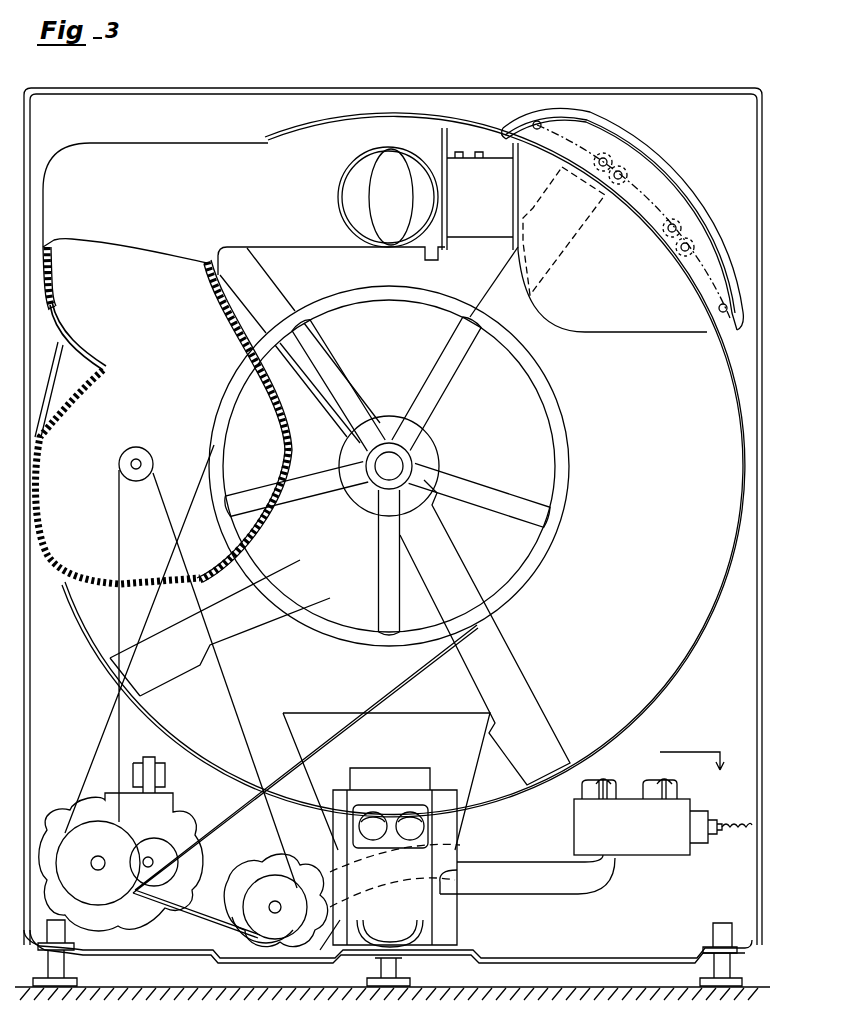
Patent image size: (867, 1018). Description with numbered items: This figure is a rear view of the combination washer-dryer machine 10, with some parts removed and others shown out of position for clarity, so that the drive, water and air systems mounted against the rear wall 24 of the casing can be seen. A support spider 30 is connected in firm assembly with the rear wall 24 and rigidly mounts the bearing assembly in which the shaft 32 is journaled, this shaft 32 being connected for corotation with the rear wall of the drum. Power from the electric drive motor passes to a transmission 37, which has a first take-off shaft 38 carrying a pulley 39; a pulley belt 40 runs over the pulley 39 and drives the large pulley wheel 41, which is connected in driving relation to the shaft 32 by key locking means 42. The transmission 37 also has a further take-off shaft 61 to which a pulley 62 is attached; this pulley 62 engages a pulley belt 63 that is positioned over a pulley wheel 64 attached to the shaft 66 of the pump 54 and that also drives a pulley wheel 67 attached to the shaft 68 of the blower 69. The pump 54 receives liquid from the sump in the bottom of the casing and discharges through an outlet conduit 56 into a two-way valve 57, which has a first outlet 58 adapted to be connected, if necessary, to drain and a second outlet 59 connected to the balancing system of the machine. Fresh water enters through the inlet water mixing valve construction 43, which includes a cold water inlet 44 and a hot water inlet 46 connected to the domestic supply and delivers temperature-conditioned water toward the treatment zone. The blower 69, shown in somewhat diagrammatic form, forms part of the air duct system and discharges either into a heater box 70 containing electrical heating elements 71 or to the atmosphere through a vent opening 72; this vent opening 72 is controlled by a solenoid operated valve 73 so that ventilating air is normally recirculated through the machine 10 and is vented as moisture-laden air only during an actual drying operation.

The machine 10 is at (696, 72).
The rear wall 24 is at (683, 652).
The support spider 30 is at (545, 333).
The shaft 32 is at (389, 452).
The transmission 37 is at (45, 820).
The first take-off shaft 38 is at (97, 868).
The pulley 39 is at (92, 898).
The pulley belt 40 is at (326, 735).
The pulley wheel 41 is at (545, 567).
The key locking means 42 is at (375, 494).
The inlet water mixing valve construction 43 is at (395, 810).
The cold water inlet 44 is at (373, 838).
The hot water inlet 46 is at (415, 830).
The pump 54 is at (255, 945).
The outlet conduit 56 is at (472, 885).
The two-way valve 57 is at (643, 858).
The first outlet 58 is at (655, 785).
The second outlet 59 is at (595, 790).
The further take-off shaft 61 is at (150, 857).
The pulley 62 is at (195, 860).
The pulley belt 63 is at (218, 690).
The pulley wheel 64 is at (278, 950).
The shaft 66 is at (272, 906).
The pulley wheel 67 is at (137, 452).
The shaft 68 is at (142, 463).
The blower 69 is at (288, 464).
The heater box 70 is at (670, 176).
The electrical heating elements 71 is at (688, 263).
The vent opening 72 is at (360, 178).
The solenoid operated valve 73 is at (385, 200).